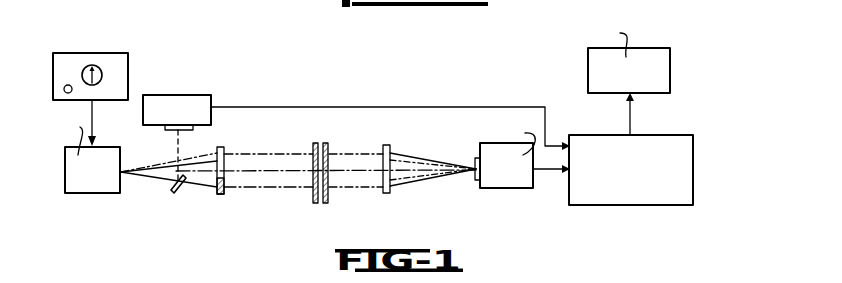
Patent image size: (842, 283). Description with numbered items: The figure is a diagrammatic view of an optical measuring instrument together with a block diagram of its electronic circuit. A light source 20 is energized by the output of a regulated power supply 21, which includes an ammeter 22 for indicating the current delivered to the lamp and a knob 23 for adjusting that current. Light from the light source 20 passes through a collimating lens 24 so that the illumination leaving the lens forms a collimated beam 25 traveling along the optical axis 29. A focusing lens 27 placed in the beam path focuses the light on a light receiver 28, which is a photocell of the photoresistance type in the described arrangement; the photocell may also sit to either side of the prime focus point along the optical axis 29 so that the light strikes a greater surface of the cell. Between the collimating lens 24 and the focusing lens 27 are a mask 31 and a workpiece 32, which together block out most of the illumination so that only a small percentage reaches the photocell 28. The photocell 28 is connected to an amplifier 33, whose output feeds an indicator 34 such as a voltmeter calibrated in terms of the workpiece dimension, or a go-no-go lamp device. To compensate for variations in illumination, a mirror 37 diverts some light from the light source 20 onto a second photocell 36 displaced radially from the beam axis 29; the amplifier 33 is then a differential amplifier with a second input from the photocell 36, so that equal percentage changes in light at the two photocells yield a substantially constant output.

The light source 20 is at (85, 195).
The regulated power supply 21 is at (134, 60).
The ammeter 22 is at (96, 66).
The knob 23 is at (66, 85).
The collimating lens 24 is at (219, 196).
The collimated beam 25 is at (237, 190).
The focusing lens 27 is at (387, 143).
The light receiver 28 is at (505, 190).
The optical axis 29 is at (278, 174).
The mask 31 is at (315, 143).
The workpiece 32 is at (326, 143).
The amplifier 33 is at (693, 188).
The indicator 34 is at (670, 72).
The second photocell 36 is at (197, 100).
The mirror 37 is at (176, 193).